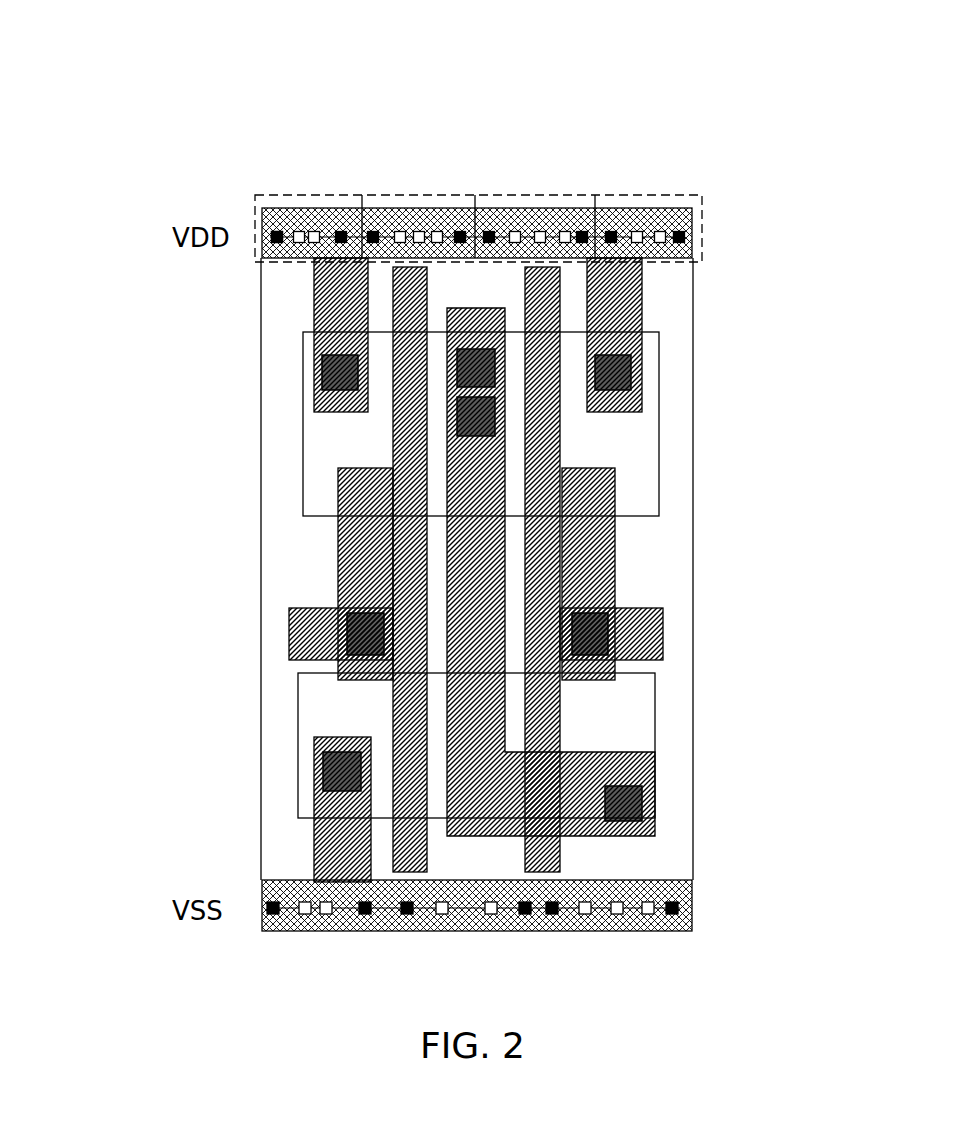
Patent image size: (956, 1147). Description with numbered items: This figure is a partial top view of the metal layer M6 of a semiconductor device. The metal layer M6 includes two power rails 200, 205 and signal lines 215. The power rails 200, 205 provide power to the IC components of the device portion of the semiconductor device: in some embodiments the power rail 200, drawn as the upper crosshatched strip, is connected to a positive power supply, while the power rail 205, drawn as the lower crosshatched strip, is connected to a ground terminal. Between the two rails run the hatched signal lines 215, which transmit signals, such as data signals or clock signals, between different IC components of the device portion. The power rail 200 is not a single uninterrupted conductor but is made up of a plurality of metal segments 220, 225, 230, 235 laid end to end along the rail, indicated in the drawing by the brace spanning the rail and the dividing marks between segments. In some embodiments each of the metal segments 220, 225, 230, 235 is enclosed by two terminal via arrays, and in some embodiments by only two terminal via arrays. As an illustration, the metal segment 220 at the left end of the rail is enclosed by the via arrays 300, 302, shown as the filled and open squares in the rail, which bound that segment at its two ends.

The metal layer M6 is at (168, 133).
The power rail 200 is at (613, 100).
The power rail 205 is at (695, 917).
The signal lines 215 is at (617, 573).
The metal segment 220 is at (342, 195).
The metal segment 225 is at (427, 195).
The metal segment 230 is at (530, 195).
The metal segment 235 is at (617, 195).
The via array 300 is at (277, 243).
The via array 302 is at (320, 238).